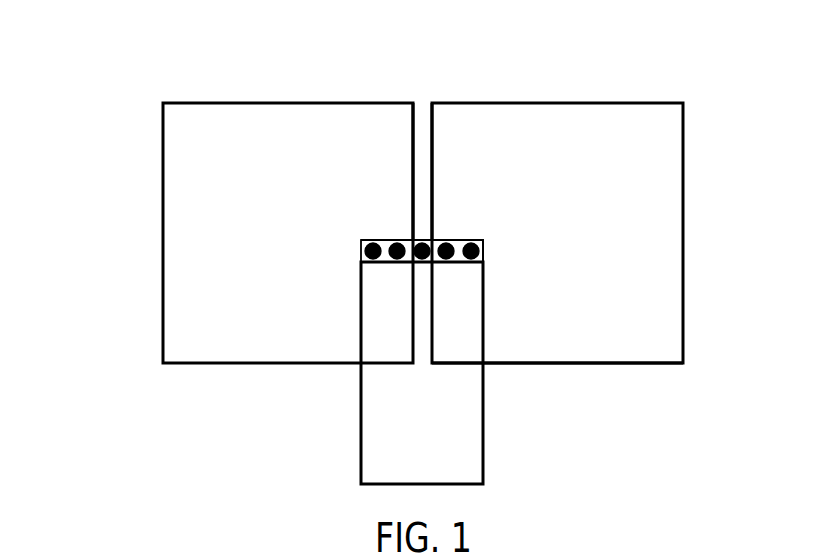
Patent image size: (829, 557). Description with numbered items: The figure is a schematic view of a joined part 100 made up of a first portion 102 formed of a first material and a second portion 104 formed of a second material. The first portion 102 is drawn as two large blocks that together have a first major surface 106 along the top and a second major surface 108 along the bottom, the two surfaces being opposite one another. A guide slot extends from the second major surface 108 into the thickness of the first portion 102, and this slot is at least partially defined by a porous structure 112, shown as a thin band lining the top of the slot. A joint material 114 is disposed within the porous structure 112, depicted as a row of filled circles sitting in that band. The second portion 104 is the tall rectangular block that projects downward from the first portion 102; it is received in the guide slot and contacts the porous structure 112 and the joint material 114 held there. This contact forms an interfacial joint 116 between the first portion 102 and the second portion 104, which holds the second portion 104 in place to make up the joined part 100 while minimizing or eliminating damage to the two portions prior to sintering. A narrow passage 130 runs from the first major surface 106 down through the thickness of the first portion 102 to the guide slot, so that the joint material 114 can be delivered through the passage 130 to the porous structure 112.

The joined part 100 is at (133, 128).
The first portion 102 is at (677, 185).
The second portion 104 is at (475, 425).
The first major surface 106 is at (622, 102).
The second major surface 108 is at (650, 364).
The porous structure 112 is at (358, 252).
The joint material 114 is at (482, 250).
The interfacial joint 116 is at (387, 240).
The passage 130 is at (425, 104).